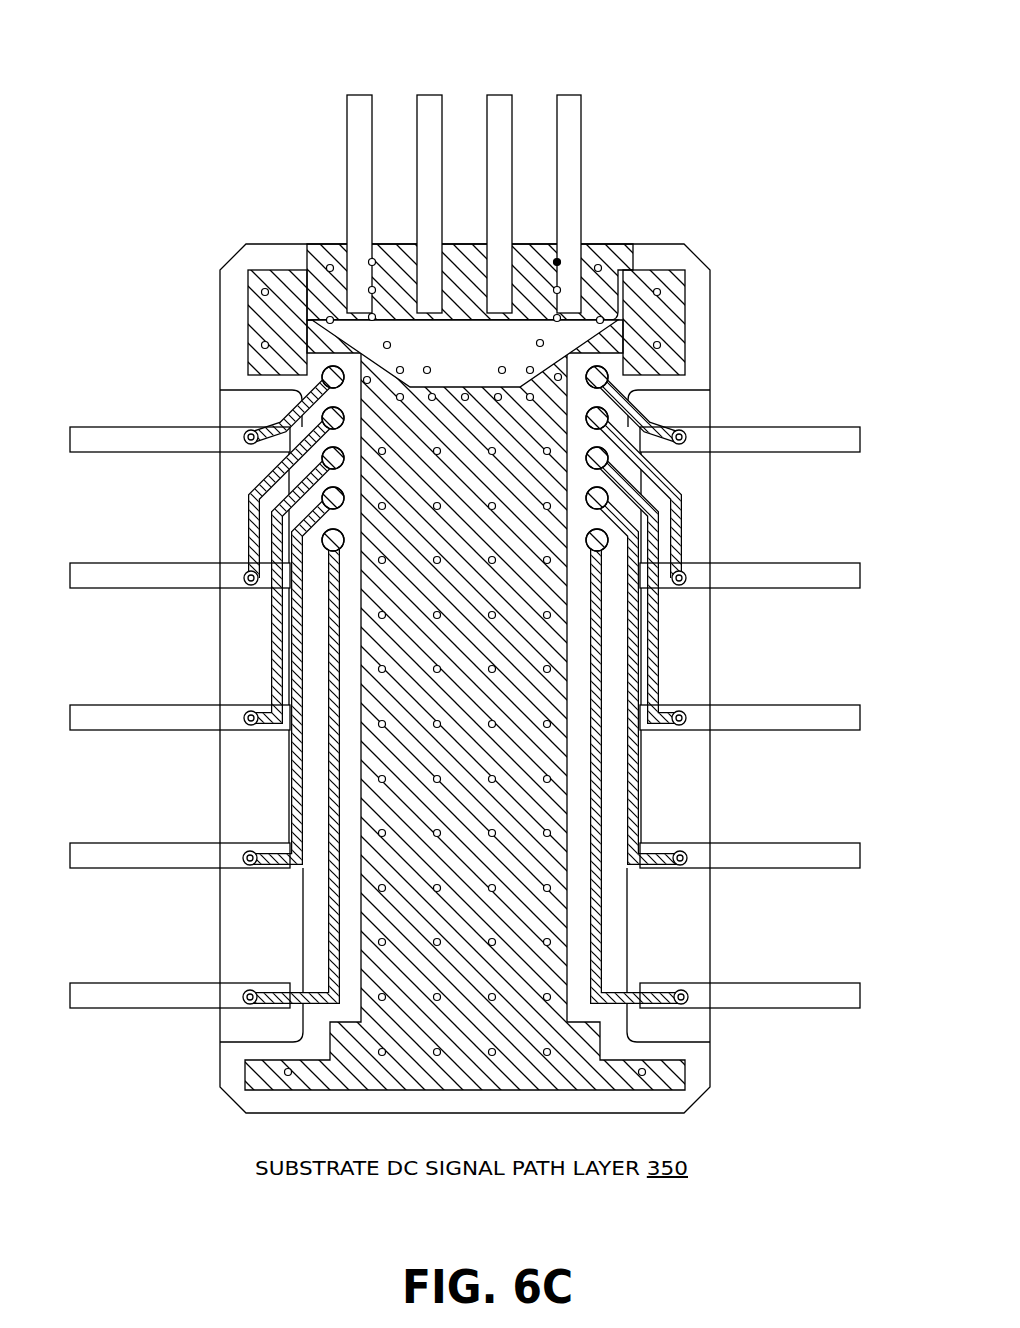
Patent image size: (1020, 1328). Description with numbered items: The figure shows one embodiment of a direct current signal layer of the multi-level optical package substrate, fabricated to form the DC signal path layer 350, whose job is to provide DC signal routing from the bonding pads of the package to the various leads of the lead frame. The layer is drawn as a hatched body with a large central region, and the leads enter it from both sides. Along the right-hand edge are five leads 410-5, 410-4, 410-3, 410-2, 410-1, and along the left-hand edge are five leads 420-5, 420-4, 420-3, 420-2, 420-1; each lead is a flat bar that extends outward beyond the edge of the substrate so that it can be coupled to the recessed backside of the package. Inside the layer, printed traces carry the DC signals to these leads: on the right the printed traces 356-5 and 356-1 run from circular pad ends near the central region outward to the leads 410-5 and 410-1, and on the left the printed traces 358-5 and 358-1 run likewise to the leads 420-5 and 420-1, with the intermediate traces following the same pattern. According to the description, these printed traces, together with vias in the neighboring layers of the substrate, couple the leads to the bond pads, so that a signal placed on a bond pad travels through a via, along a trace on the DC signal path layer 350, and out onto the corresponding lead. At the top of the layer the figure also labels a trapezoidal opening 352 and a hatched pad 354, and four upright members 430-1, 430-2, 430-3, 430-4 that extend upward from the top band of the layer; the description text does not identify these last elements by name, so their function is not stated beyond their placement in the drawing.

The DC signal path layer 350 is at (677, 286).
The window opening in DC signal path layer 352 is at (620, 363).
The DC ground pad 354 is at (308, 352).
The printed trace 356-5 is at (650, 415).
The printed trace 356-1 is at (668, 990).
The printed trace 358-5 is at (298, 395).
The printed trace 358-1 is at (245, 998).
The lead 410-5 is at (814, 425).
The lead 410-4 is at (814, 561).
The lead 410-3 is at (814, 703).
The lead 410-2 is at (814, 841).
The lead 410-1 is at (814, 981).
The lead 420-5 is at (118, 425).
The lead 420-4 is at (118, 561).
The lead 420-3 is at (118, 703).
The lead 420-2 is at (120, 841).
The lead 420-1 is at (120, 981).
The RF connector lead 430-1 is at (357, 94).
The RF connector lead 430-2 is at (427, 94).
The RF connector lead 430-3 is at (497, 94).
The RF connector lead 430-4 is at (567, 94).